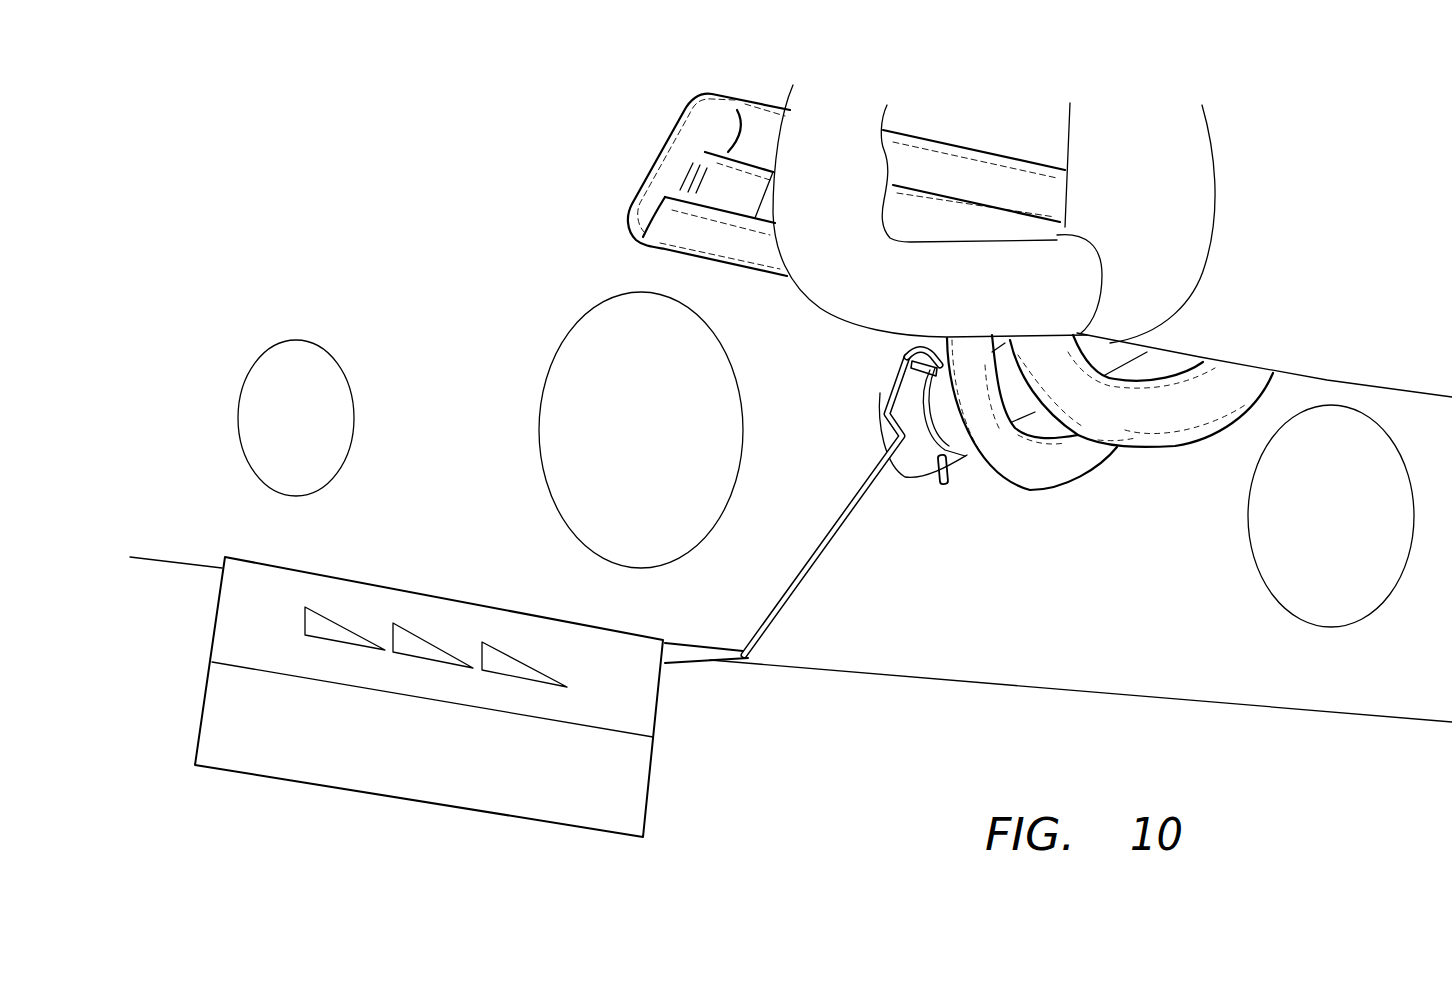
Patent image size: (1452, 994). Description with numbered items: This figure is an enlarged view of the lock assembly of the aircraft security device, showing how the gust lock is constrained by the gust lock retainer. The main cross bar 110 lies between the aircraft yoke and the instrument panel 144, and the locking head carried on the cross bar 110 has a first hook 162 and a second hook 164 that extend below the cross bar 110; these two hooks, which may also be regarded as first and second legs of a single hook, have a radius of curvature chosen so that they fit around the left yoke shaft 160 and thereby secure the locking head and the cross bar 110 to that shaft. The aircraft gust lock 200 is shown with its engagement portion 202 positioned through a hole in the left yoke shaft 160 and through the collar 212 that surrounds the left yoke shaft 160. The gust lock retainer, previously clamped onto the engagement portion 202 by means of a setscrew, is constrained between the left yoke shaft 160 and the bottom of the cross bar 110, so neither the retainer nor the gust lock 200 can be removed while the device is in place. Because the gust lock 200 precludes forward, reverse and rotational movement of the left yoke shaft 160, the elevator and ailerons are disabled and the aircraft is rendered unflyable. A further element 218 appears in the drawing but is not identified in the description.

The main cross bar 110 is at (720, 115).
The instrument panel 144 is at (1055, 668).
The left yoke shaft 160 is at (1010, 403).
The first hook 162 is at (1152, 425).
The second hook 164 is at (1057, 467).
The gust lock 200 is at (638, 722).
The engagement portion 202 is at (903, 363).
The collar 212 is at (888, 433).
The wire hook end 218 is at (942, 360).